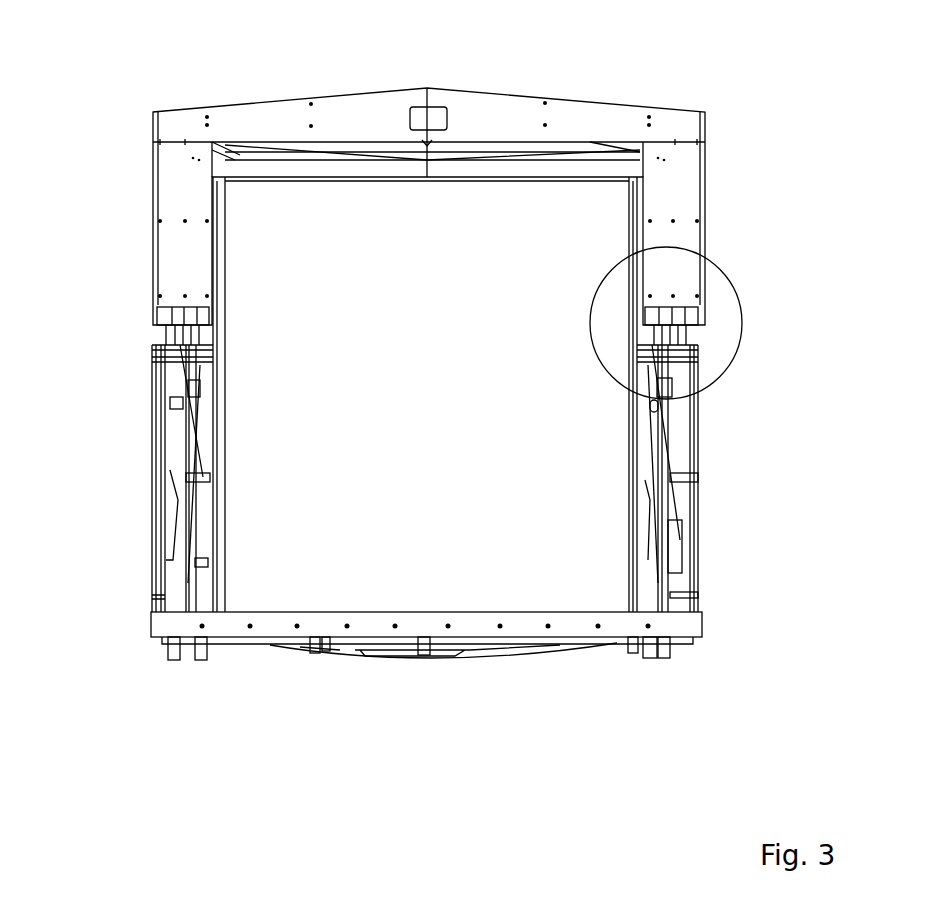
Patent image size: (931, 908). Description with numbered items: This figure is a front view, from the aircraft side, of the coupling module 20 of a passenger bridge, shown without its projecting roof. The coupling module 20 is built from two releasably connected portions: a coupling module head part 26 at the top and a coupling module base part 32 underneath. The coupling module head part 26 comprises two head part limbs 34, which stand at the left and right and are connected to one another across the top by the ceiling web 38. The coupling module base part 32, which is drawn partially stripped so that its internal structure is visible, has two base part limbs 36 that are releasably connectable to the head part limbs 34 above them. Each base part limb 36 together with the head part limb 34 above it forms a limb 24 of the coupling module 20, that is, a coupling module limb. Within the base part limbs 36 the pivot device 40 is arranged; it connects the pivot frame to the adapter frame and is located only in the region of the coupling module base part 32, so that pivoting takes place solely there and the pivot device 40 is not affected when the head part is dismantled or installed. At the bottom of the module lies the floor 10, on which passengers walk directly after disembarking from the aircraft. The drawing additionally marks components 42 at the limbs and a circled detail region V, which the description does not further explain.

The coupling module 20 is at (137, 108).
The coupling module head part 26 is at (298, 90).
The ceiling web 38 is at (480, 102).
The head part limb 34 is at (160, 193).
The limb of the coupling module 24 is at (143, 317).
The base part limb 36 is at (153, 528).
The pivot device 40 is at (172, 412).
The fastening block 42 is at (185, 382).
The coupling module base part 32 is at (143, 604).
The floor 10 is at (408, 612).
The detail view region V is at (730, 283).